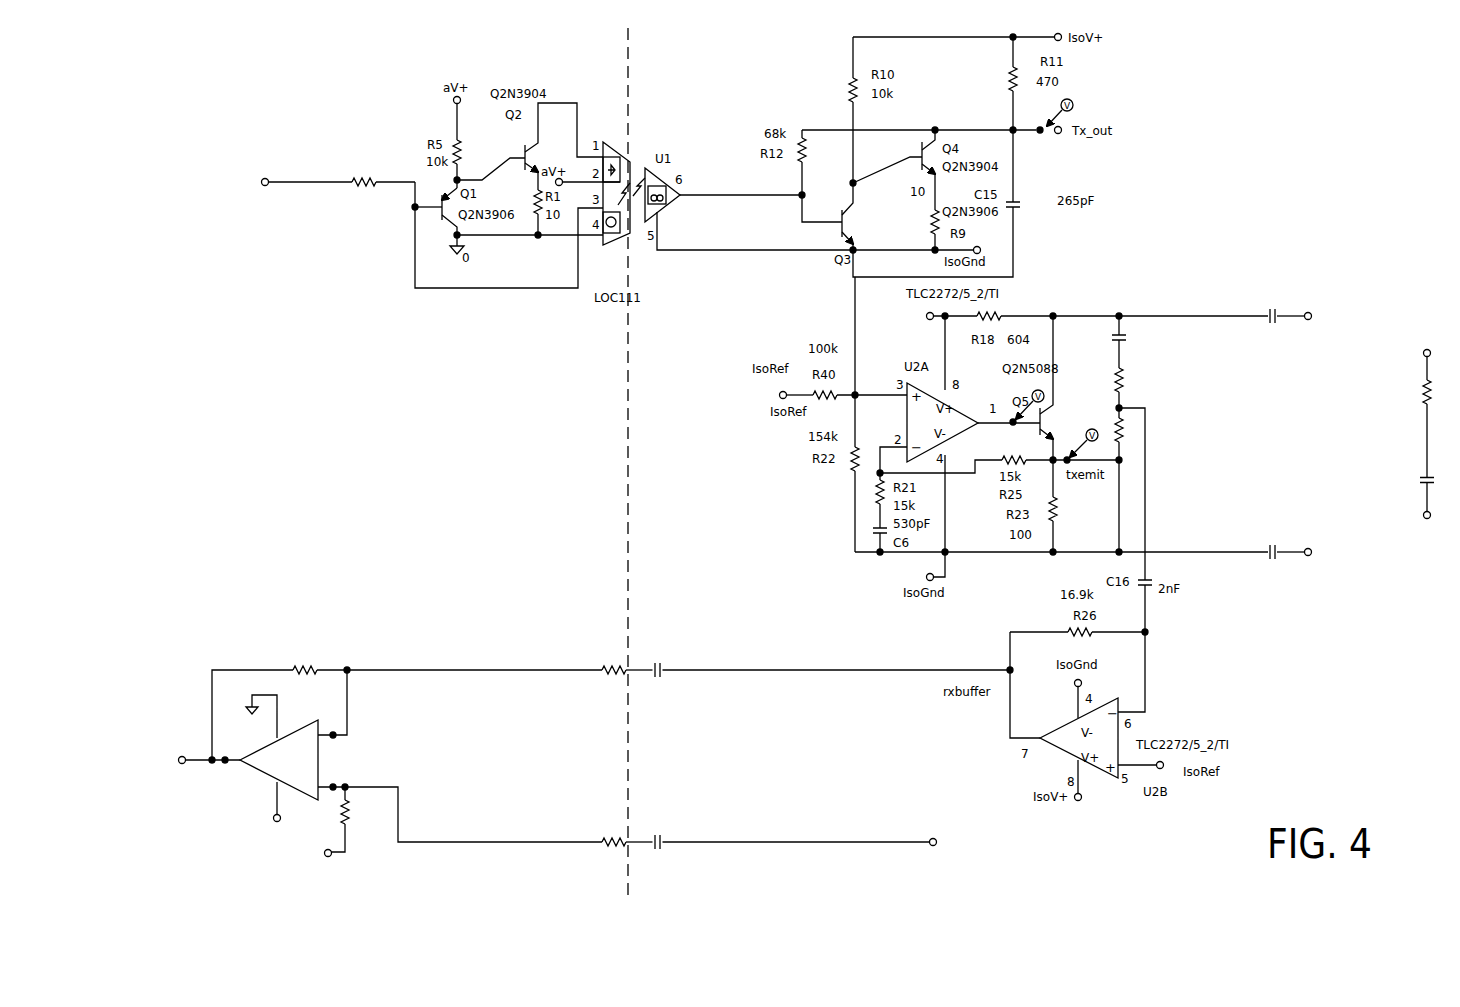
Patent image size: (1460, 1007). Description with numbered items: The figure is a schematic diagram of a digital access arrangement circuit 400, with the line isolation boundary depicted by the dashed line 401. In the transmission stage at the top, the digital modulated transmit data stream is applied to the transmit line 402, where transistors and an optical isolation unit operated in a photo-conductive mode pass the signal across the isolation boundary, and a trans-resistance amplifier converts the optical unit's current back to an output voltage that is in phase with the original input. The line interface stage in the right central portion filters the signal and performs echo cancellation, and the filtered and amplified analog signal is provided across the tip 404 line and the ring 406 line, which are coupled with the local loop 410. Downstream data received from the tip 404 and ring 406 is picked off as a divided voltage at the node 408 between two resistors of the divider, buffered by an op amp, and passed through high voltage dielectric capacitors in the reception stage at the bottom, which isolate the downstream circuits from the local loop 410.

The digital access arrangement circuit 400 is at (410, 540).
The dashed line 401 is at (621, 540).
The transmit line 402 is at (266, 190).
The tip line 404 is at (1331, 296).
The ring line 406 is at (1340, 541).
The node 408 is at (1125, 406).
The local loop 410 is at (1420, 427).